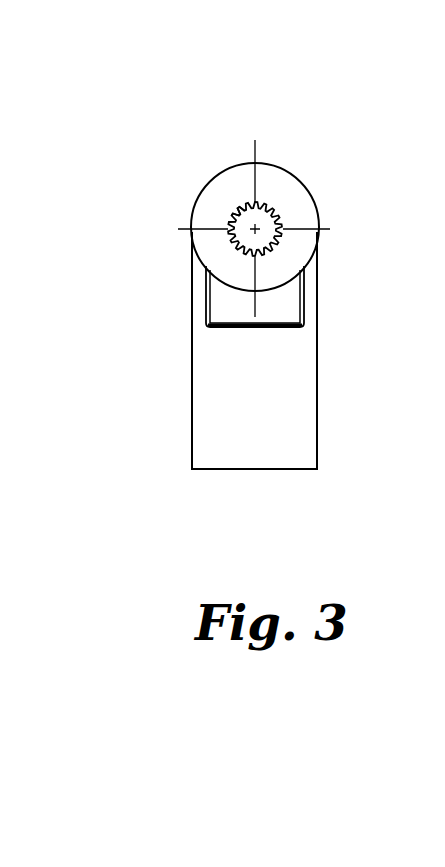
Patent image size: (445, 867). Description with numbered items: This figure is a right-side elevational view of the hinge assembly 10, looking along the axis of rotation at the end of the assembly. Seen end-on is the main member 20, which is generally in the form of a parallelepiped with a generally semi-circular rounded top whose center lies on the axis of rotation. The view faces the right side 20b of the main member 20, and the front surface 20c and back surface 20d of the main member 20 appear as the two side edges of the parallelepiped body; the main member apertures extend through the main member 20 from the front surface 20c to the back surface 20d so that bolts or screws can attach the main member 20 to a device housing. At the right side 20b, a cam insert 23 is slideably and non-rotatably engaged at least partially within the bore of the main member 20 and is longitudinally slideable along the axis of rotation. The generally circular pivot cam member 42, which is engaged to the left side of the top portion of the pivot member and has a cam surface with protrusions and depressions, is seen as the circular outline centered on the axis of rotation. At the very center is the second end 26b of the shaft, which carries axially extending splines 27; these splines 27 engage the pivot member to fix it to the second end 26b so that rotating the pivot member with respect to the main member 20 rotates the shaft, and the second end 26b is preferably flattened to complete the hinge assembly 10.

The hinge assembly 10 is at (302, 126).
The main member 20 is at (287, 378).
The right side 20b is at (245, 452).
The front surface 20c is at (192, 365).
The back surface 20d is at (317, 443).
The cam insert 23 is at (278, 307).
The second end of the shaft 26b is at (266, 220).
The splines 27 is at (243, 213).
The pivot cam member 42 is at (290, 200).